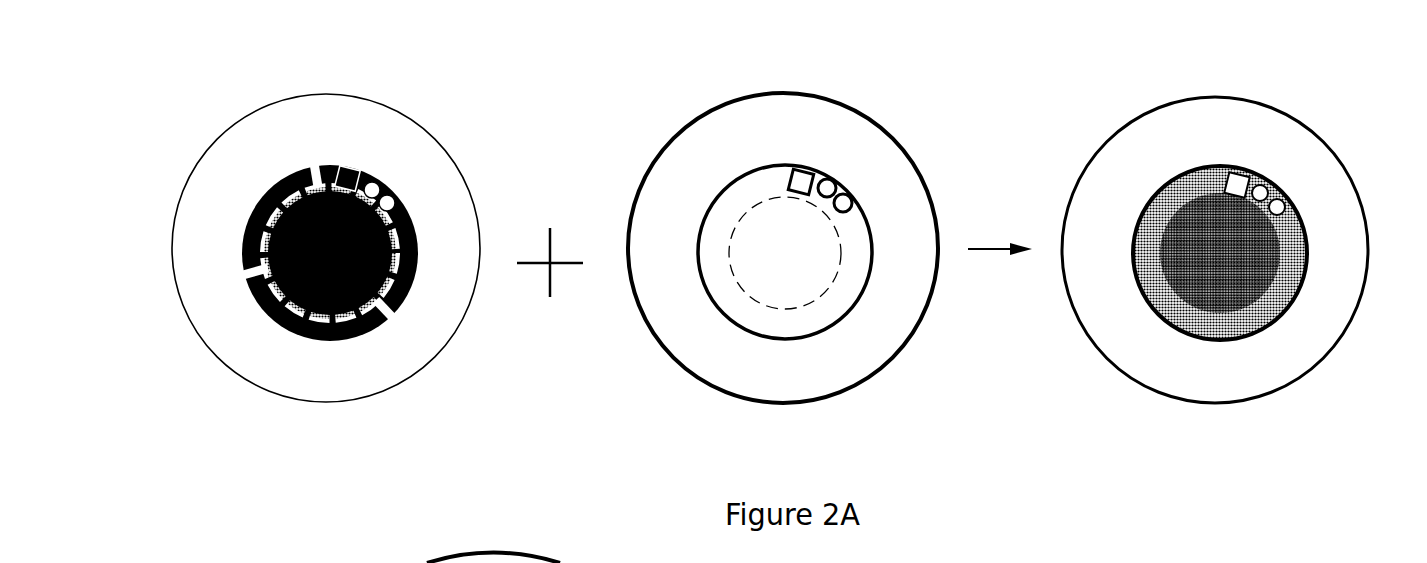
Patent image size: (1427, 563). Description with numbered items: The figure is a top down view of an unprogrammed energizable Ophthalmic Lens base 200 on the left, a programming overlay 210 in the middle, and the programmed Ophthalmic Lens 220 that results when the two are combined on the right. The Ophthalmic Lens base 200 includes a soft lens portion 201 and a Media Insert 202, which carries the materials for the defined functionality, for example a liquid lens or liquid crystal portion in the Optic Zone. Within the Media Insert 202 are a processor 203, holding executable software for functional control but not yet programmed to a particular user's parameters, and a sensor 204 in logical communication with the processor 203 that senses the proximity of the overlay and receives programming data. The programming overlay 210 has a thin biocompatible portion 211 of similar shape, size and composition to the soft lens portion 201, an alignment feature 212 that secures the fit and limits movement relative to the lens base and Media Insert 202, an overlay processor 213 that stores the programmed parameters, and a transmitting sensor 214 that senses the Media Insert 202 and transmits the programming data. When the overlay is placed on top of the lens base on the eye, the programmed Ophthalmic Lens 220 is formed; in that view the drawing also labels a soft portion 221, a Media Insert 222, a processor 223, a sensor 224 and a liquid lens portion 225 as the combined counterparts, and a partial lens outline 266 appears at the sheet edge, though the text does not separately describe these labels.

The unprogrammed energizable Ophthalmic Lens base 200 is at (337, 256).
The soft lens portion 201 is at (267, 125).
The Media Insert 202 is at (392, 320).
The processor 203 is at (348, 162).
The sensor 204 is at (388, 184).
The programming overlay 210 is at (795, 261).
The thin biocompatible portion 211 is at (723, 128).
The alignment feature 212 is at (832, 320).
The overlay processor 213 is at (801, 162).
The transmitting sensor 214 is at (847, 172).
The programmed Ophthalmic Lens 220 is at (1228, 265).
The sclera region 221 is at (1160, 130).
The iris region 222 is at (1268, 315).
The square feature 223 is at (1238, 170).
The circular features 224 is at (1278, 190).
The pupil region 225 is at (1185, 283).
The eye outline 266 is at (395, 562).